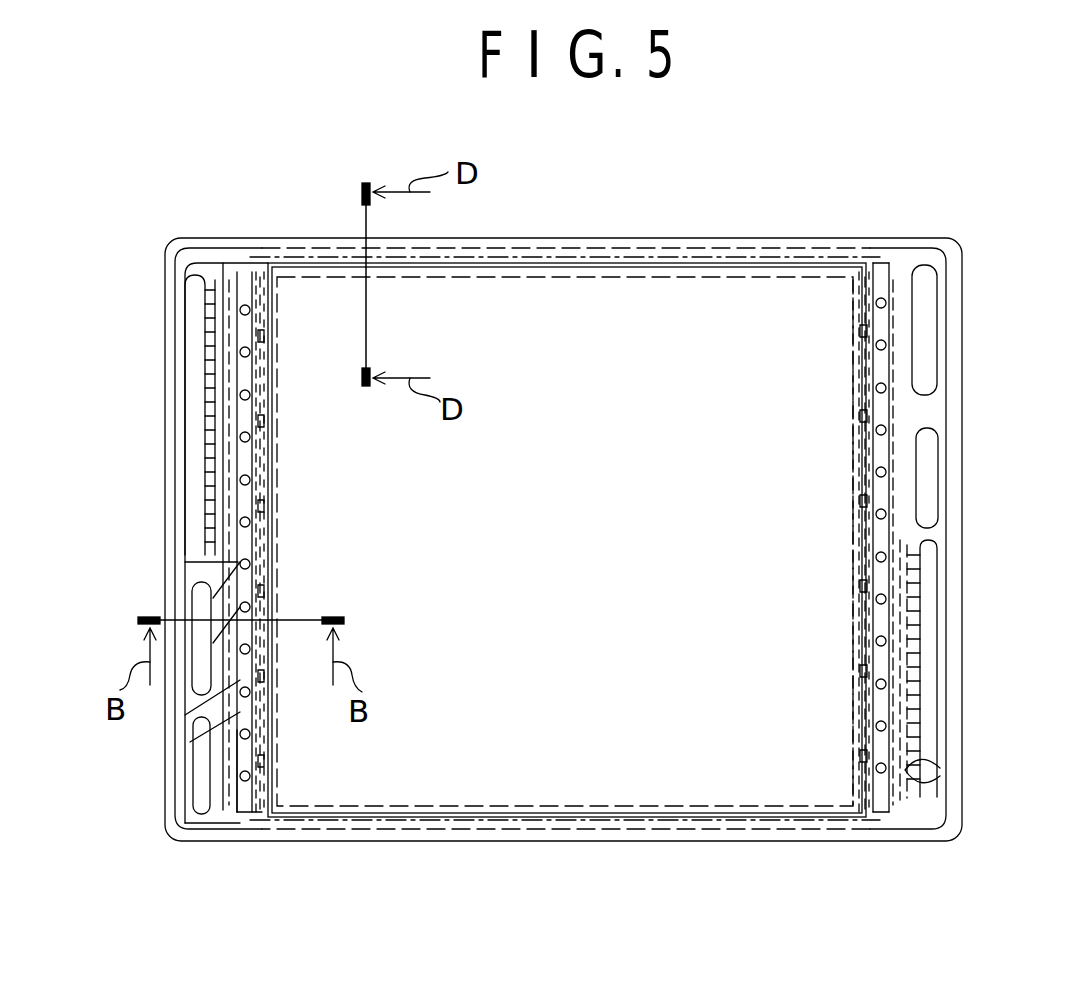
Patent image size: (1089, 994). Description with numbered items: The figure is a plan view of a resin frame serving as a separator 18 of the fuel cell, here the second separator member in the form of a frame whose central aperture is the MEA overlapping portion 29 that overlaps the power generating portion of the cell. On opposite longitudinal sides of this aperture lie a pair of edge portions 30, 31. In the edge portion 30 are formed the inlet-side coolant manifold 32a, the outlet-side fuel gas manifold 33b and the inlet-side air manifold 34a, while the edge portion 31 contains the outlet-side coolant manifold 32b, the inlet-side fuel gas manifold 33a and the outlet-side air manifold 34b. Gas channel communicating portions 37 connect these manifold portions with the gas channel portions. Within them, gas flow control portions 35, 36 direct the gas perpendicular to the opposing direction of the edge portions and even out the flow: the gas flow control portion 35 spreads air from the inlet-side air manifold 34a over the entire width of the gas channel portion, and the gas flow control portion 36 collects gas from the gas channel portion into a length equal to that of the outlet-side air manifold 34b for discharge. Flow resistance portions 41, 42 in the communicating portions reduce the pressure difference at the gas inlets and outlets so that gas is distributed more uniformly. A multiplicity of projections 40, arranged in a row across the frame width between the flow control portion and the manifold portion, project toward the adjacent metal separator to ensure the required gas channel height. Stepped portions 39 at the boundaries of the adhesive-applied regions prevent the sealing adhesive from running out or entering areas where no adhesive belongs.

The separator 18 is at (610, 240).
The MEA overlapping portion 29 is at (713, 782).
The edge portion 30 is at (262, 300).
The edge portion 31 is at (878, 264).
The inlet-side coolant manifold 32a is at (203, 600).
The outlet-side coolant manifold 32b is at (923, 307).
The inlet-side fuel gas manifold 33a is at (930, 470).
The outlet-side fuel gas manifold 33b is at (205, 795).
The inlet-side air manifold 34a is at (210, 447).
The outlet-side air manifold 34b is at (928, 635).
The gas flow control portion 35 is at (262, 814).
The gas flow control portion 36 is at (877, 809).
The gas channel communicating portion 37 is at (234, 814).
The stepped portion 39 is at (226, 745).
The projection 40 is at (240, 300).
The flow resistance portion 41 is at (215, 290).
The flow resistance portion 42 is at (905, 770).